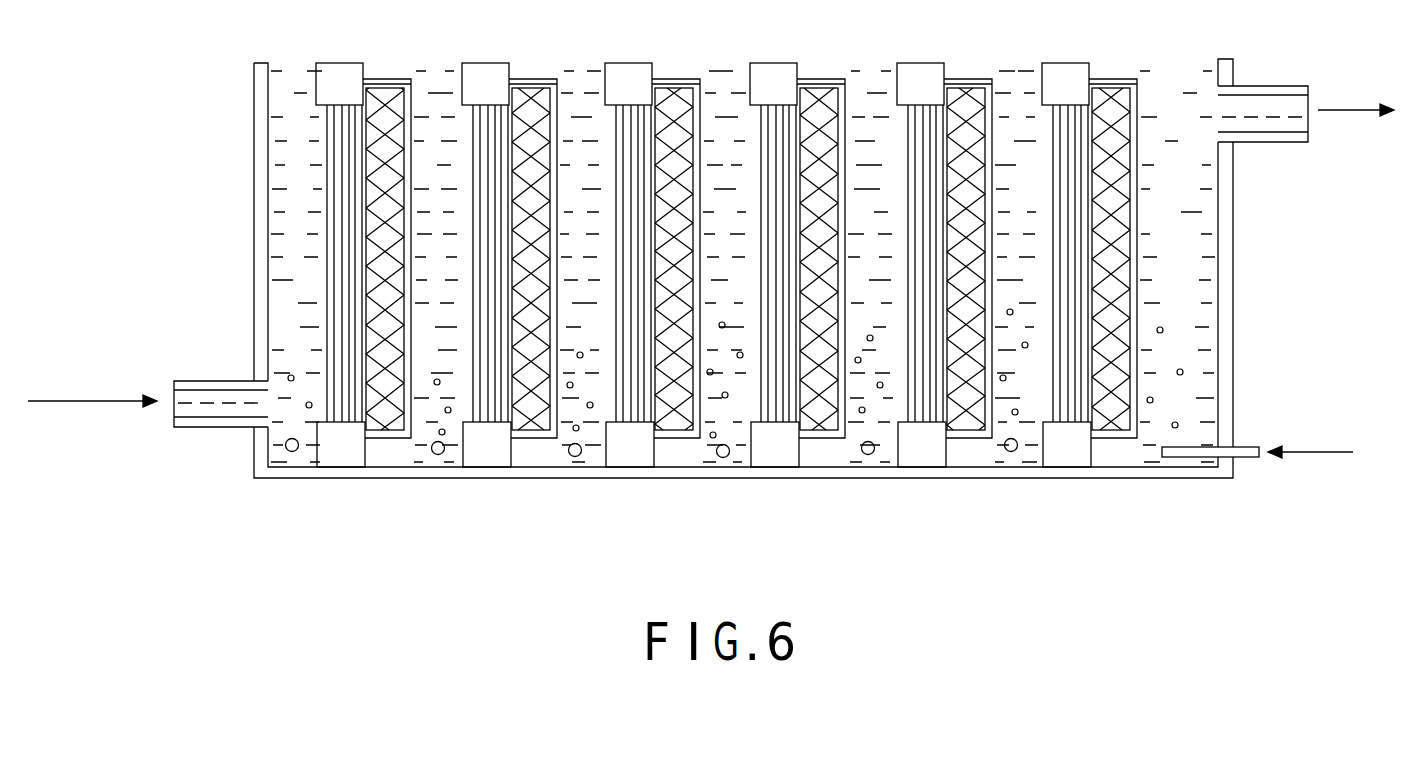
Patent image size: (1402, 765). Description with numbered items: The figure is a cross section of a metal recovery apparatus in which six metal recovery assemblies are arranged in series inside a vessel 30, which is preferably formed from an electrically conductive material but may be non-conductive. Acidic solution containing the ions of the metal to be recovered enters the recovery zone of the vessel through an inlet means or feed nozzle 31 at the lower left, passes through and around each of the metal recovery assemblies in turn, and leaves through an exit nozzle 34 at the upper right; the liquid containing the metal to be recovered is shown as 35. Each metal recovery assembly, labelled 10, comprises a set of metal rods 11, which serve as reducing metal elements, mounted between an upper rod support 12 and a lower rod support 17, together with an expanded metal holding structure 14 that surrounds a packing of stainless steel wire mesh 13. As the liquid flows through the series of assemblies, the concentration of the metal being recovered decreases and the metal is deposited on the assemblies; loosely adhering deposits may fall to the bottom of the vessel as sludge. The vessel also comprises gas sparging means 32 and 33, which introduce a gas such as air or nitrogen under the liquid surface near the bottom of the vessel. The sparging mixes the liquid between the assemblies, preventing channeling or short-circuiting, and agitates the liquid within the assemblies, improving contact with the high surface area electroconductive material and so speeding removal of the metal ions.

The electrode unit 10 is at (689, 55).
The metal rods 11 is at (214, 229).
The rod support 12 is at (333, 62).
The packing of stainless steel wire mesh 13 is at (405, 160).
The expanded metal holding structure 14 is at (392, 441).
The rod support 17 is at (335, 458).
The vessel 30 is at (254, 285).
The inlet means 31 is at (200, 428).
The gas sparging means 32 is at (290, 452).
The gas sparging means 33 is at (1240, 458).
The exit nozzle 34 is at (1280, 86).
The liquid in the vessel 35 is at (1178, 68).